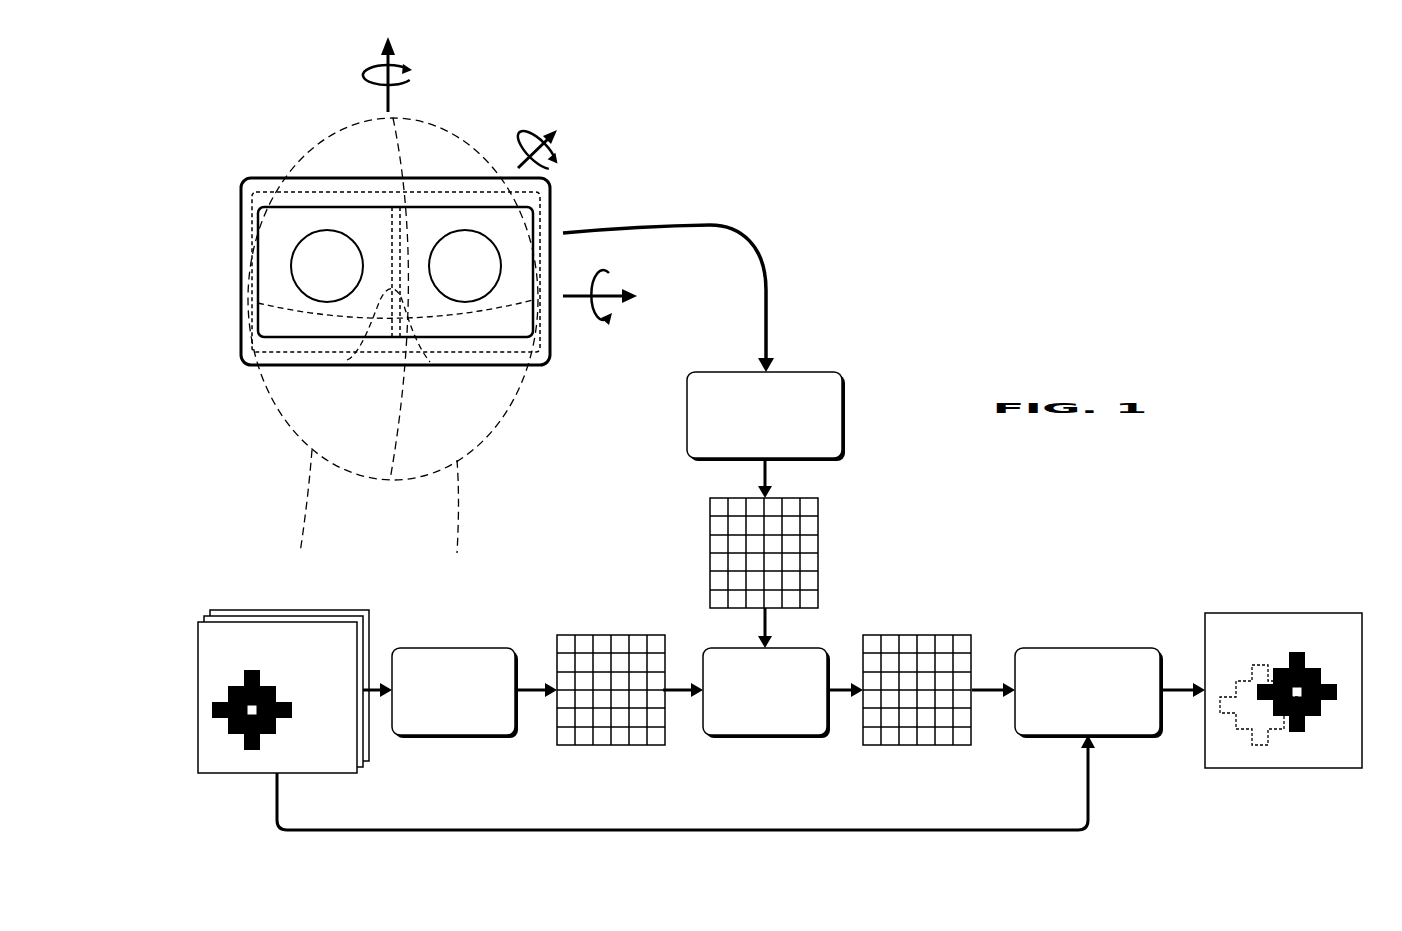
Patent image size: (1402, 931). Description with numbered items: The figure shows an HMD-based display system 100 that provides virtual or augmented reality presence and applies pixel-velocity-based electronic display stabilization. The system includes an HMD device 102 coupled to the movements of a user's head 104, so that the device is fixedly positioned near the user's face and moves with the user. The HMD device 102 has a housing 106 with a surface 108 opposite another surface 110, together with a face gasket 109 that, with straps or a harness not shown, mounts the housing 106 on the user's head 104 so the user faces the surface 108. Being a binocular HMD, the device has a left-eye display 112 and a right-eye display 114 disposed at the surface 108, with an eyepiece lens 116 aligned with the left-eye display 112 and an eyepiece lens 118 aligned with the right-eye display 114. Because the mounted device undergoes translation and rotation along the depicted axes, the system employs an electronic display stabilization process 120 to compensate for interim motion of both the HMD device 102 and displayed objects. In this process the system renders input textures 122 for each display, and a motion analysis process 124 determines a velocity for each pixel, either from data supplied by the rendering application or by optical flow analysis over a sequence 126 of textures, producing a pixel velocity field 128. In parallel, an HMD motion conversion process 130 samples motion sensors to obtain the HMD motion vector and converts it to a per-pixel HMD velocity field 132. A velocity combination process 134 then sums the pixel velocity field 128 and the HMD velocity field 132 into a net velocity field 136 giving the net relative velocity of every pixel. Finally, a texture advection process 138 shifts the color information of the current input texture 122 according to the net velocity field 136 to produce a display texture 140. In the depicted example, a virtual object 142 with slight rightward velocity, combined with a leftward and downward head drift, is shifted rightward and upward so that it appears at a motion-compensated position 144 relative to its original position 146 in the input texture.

The HMD-based display system 100 is at (572, 162).
The HMD device 102 is at (265, 172).
The user's head 104 is at (280, 437).
The housing 106 is at (553, 213).
The surface 108 is at (443, 362).
The face gasket 109 is at (347, 353).
The surface 110 is at (558, 333).
The left-eye display 112 is at (333, 272).
The right-eye display 114 is at (420, 272).
The eyepiece lens 116 is at (355, 240).
The eyepiece lens 118 is at (489, 242).
The electronic display stabilization (EDS) process 120 is at (882, 540).
The input texture 122 is at (277, 697).
The motion analysis process 124 is at (451, 736).
The sequence of textures 126 is at (368, 598).
The pixel velocity field 128 is at (622, 626).
The HMD motion conversion process 130 is at (843, 420).
The HMD velocity field 132 is at (810, 486).
The velocity combination process 134 is at (764, 736).
The net velocity field 136 is at (933, 626).
The texture advection process 138 is at (1087, 647).
The display texture 140 is at (1283, 675).
The virtual object 142 is at (238, 686).
The motion-compensated position 144 is at (1318, 684).
The original position 146 is at (1246, 682).